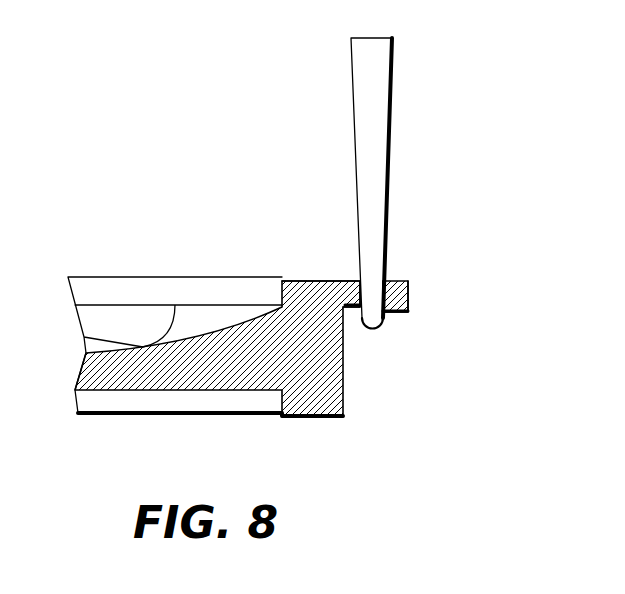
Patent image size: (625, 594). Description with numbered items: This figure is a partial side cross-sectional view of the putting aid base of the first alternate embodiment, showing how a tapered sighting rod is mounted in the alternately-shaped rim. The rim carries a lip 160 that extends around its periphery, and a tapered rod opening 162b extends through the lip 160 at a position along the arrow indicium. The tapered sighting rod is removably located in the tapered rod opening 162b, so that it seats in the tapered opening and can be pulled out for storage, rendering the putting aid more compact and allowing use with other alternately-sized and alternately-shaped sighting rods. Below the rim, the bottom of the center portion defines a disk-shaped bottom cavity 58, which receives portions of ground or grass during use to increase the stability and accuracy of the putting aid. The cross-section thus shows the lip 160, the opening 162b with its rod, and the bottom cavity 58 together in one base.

The tapered rod opening 162b is at (385, 275).
The lip 160 is at (407, 298).
The bottom cavity 58 is at (252, 405).